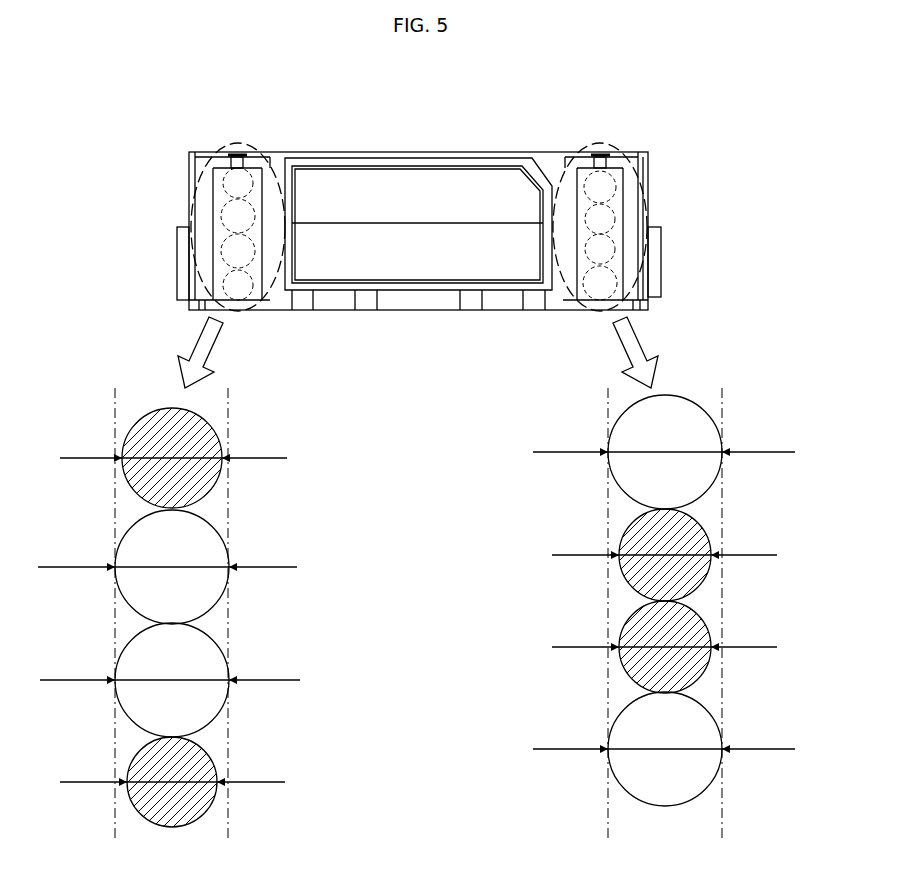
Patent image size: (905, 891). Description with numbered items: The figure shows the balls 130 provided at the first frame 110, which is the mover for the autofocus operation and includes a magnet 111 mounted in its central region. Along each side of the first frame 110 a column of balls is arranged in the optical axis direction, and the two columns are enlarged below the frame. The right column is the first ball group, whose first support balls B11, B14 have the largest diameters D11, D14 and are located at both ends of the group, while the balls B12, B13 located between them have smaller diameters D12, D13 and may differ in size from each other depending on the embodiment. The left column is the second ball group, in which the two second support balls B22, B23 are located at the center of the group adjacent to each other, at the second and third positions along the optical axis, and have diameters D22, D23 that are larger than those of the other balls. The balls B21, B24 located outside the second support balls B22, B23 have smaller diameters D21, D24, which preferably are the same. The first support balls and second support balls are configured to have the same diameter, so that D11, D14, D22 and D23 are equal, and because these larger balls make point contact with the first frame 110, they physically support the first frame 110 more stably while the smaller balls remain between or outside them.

The first frame 110 is at (372, 151).
The magnet 111 is at (410, 260).
The balls 130 is at (233, 220).
The first support ball B11 is at (664, 452).
The ball B12 is at (672, 553).
The ball B13 is at (672, 645).
The first support ball B14 is at (664, 749).
The ball B21 is at (164, 456).
The second support ball B22 is at (167, 565).
The second support ball B23 is at (170, 672).
The ball B24 is at (163, 776).
The diameter of ball B11 D11 is at (757, 414).
The diameter of ball B12 D12 is at (757, 516).
The diameter of ball B13 D13 is at (757, 609).
The diameter of ball B14 D14 is at (757, 711).
The diameter of ball B21 D21 is at (173, 448).
The diameter of ball B22 D22 is at (167, 557).
The diameter of ball B23 D23 is at (170, 670).
The diameter of ball B24 D24 is at (172, 772).